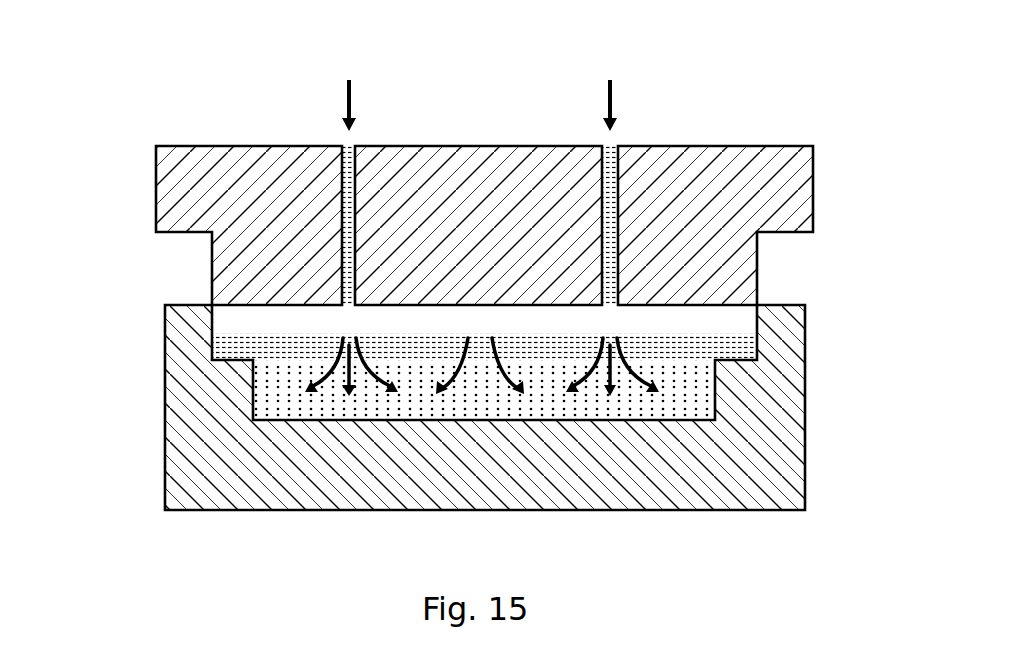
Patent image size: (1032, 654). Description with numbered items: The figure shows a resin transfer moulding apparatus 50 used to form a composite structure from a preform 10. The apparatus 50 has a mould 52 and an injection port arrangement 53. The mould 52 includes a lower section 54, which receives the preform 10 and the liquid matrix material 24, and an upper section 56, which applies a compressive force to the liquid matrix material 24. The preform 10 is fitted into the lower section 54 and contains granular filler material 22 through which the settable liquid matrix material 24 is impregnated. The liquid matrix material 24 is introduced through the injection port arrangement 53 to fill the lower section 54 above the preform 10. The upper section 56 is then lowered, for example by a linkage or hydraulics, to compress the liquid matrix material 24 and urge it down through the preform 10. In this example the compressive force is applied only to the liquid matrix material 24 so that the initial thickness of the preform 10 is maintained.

The preform 10 is at (690, 398).
The granular filler material 22 is at (412, 398).
The liquid matrix material 24 is at (82, 305).
The resin transfer moulding apparatus 50 is at (138, 85).
The mould 52 is at (805, 313).
The injection port arrangement 53 is at (350, 192).
The lower section 54 is at (195, 428).
The upper section 56 is at (187, 197).